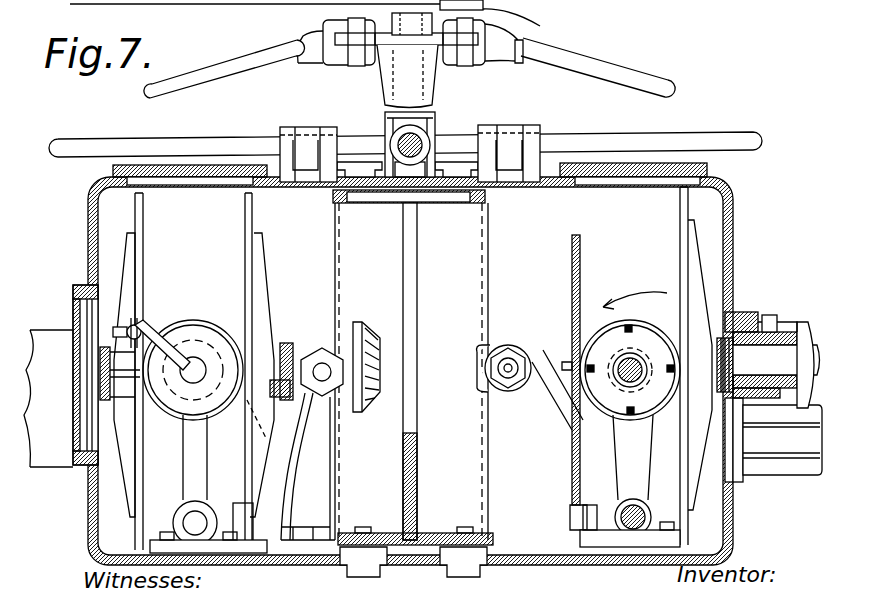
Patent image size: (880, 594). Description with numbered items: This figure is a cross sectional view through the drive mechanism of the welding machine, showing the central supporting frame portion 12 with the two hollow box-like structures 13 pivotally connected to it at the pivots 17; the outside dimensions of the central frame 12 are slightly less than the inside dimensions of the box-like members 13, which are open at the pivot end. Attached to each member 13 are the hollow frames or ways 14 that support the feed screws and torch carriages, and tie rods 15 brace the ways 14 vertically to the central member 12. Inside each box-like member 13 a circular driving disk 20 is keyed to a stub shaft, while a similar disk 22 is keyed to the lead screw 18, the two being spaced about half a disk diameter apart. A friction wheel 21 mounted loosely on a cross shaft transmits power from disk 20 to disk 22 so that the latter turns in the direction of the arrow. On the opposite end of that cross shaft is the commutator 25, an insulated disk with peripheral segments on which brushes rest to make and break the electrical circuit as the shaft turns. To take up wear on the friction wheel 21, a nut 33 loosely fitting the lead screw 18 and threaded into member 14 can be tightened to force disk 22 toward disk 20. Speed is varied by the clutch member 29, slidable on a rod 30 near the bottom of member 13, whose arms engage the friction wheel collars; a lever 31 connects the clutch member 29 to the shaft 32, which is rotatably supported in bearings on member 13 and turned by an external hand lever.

The central supporting frame portion 12 is at (413, 547).
The hollow box-like structure 13 is at (87, 247).
The hollow frame or way 14 is at (52, 462).
The tie rod 15 is at (239, 42).
The pivot 17 is at (363, 162).
The lead screw 18 is at (775, 362).
The circular driving disk 20 is at (243, 207).
The friction wheel 21 is at (173, 323).
The disk 22 is at (137, 208).
The commutator 25 is at (188, 337).
The clutch member 29 is at (574, 467).
The rod 30 is at (207, 540).
The lever 31 is at (282, 133).
The shaft 32 is at (177, 142).
The nut 33 is at (810, 345).